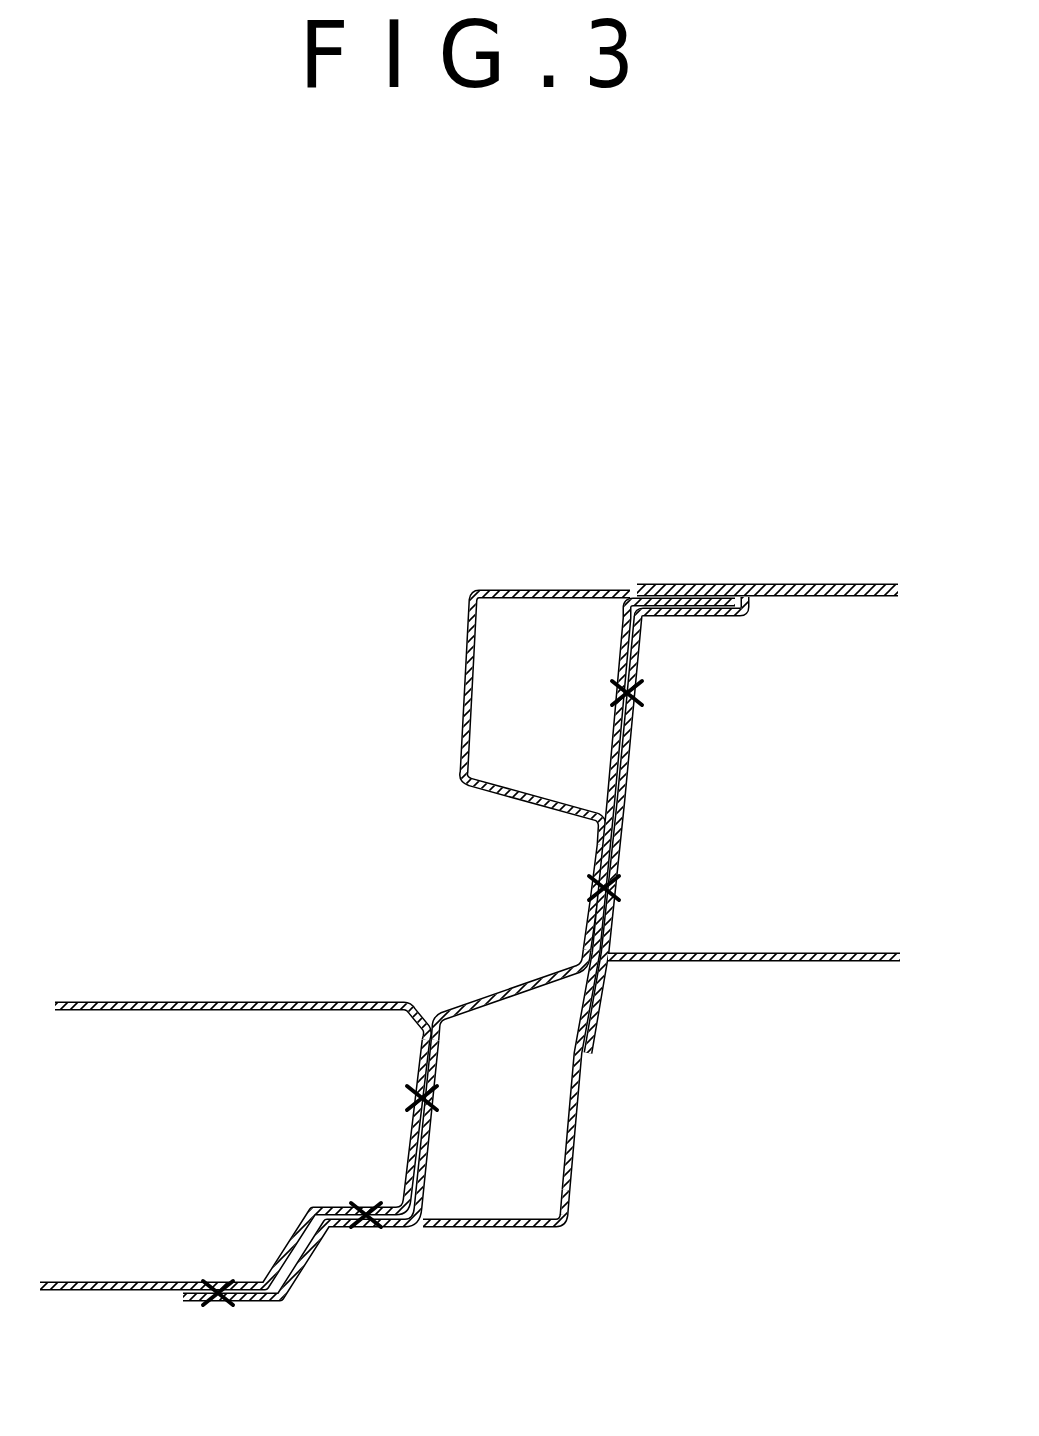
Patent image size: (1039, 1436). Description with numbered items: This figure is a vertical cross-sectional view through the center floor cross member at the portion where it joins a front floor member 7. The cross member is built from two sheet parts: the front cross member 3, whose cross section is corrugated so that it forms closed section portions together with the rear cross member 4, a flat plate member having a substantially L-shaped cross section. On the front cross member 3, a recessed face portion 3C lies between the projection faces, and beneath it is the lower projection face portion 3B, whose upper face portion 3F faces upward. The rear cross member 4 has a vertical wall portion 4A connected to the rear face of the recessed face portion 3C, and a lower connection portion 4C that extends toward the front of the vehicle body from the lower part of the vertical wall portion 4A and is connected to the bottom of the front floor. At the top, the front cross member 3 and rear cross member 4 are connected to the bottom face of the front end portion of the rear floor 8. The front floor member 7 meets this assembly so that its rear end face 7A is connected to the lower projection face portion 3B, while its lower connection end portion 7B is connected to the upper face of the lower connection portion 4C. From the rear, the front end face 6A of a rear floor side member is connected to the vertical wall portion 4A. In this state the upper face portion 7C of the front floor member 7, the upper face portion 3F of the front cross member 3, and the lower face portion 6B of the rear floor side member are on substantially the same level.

The front cross member 3 is at (478, 592).
The lower projection face portion 3B is at (425, 1195).
The recessed face portion 3C is at (586, 905).
The upper face portion 3F is at (488, 995).
The rear cross member 4 is at (557, 1230).
The vertical wall portion 4A is at (578, 1137).
The lower connection portion 4C is at (435, 1228).
The front end face 6A is at (636, 768).
The lower face portion 6B is at (765, 962).
The front floor member 7 is at (237, 1000).
The rear end face 7A is at (405, 1165).
The lower connection end portion 7B is at (280, 1253).
The upper face portion 7C is at (350, 998).
The rear floor 8 is at (796, 580).